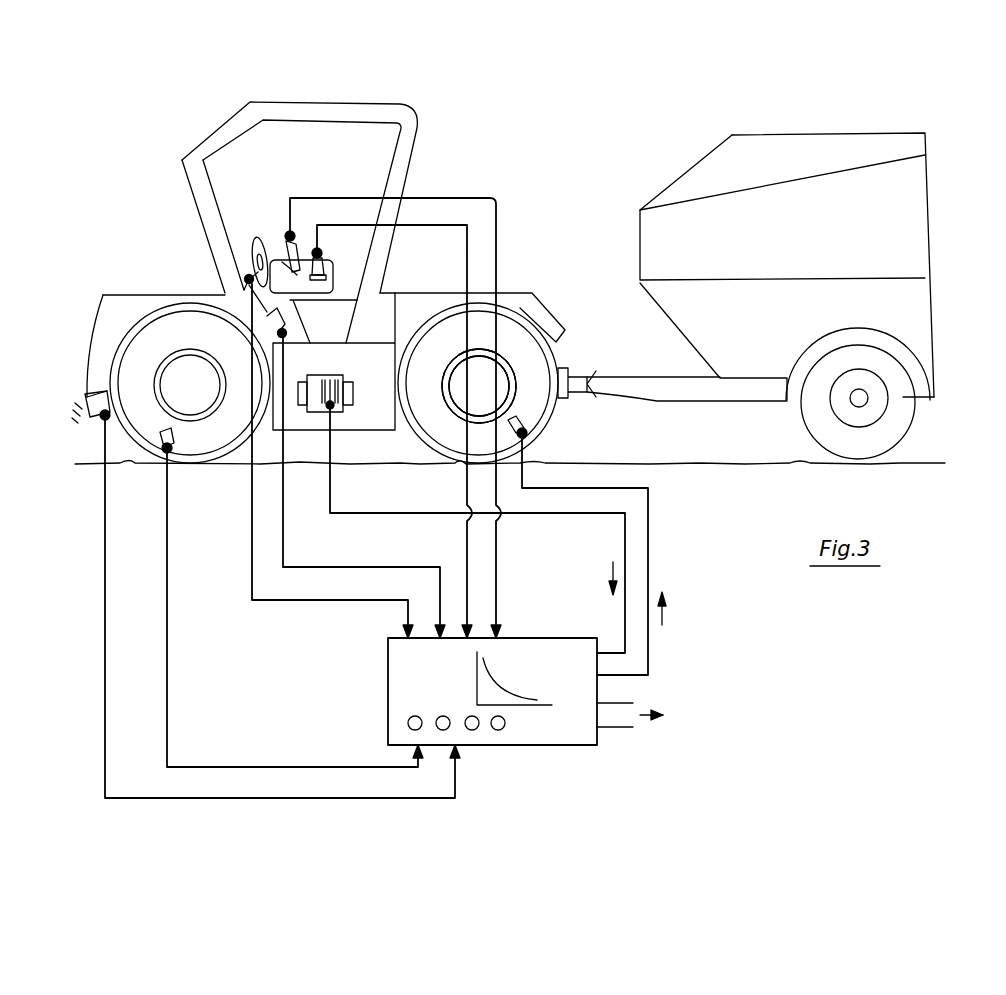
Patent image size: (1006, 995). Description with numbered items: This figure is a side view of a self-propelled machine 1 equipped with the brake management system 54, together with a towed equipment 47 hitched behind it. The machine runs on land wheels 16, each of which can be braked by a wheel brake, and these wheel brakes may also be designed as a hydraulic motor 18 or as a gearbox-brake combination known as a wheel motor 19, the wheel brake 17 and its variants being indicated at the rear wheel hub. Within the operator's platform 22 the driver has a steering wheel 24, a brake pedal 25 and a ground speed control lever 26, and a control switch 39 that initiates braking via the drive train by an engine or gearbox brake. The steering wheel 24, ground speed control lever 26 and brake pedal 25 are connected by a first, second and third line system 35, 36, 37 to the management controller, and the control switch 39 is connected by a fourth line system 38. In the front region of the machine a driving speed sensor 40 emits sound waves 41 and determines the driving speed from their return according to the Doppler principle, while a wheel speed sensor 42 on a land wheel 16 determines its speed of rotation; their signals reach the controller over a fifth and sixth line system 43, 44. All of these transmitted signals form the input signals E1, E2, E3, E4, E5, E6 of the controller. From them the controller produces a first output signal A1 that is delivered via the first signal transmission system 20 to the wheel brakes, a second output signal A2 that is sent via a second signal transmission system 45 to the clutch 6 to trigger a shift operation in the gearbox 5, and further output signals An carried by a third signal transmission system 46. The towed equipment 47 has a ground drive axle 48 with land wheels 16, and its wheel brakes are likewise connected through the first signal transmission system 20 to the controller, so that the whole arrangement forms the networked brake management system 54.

The self-propelled machine 1 is at (306, 101).
The gearbox 5 is at (313, 380).
The clutch 6 is at (345, 375).
The land wheel 16 is at (121, 397).
The wheel brake 17 is at (505, 378).
The hydraulic motor 18 is at (479, 386).
The wheel motor 19 is at (479, 386).
The first signal transmission system 20 is at (650, 523).
The operator's platform 22 is at (279, 168).
The steering wheel 24 is at (248, 250).
The brake pedal 25 is at (272, 320).
The ground speed control lever 26 is at (290, 247).
The first line system 35 is at (283, 530).
The second line system 36 is at (250, 588).
The third line system 37 is at (465, 198).
The fourth line system 38 is at (467, 257).
The control switch 39 is at (320, 263).
The driving speed sensor 40 is at (103, 295).
The sound waves 41 is at (104, 420).
The wheel speed sensor 42 is at (175, 432).
The fifth line system 43 is at (107, 745).
The sixth line system 44 is at (193, 767).
The second signal transmission system 45 is at (628, 641).
The third signal transmission system 46 is at (620, 703).
The towed equipment 47 is at (810, 233).
The ground drive axle 48 is at (862, 395).
The brake management system 54 is at (572, 748).
The input signal E1 is at (383, 567).
The input signal E2 is at (357, 603).
The input signal E3 is at (498, 585).
The input signal E4 is at (472, 558).
The input signal E5 is at (453, 780).
The input signal E6 is at (337, 767).
The first output signal A1 is at (665, 600).
The second output signal A2 is at (613, 578).
The further output signal An is at (655, 722).